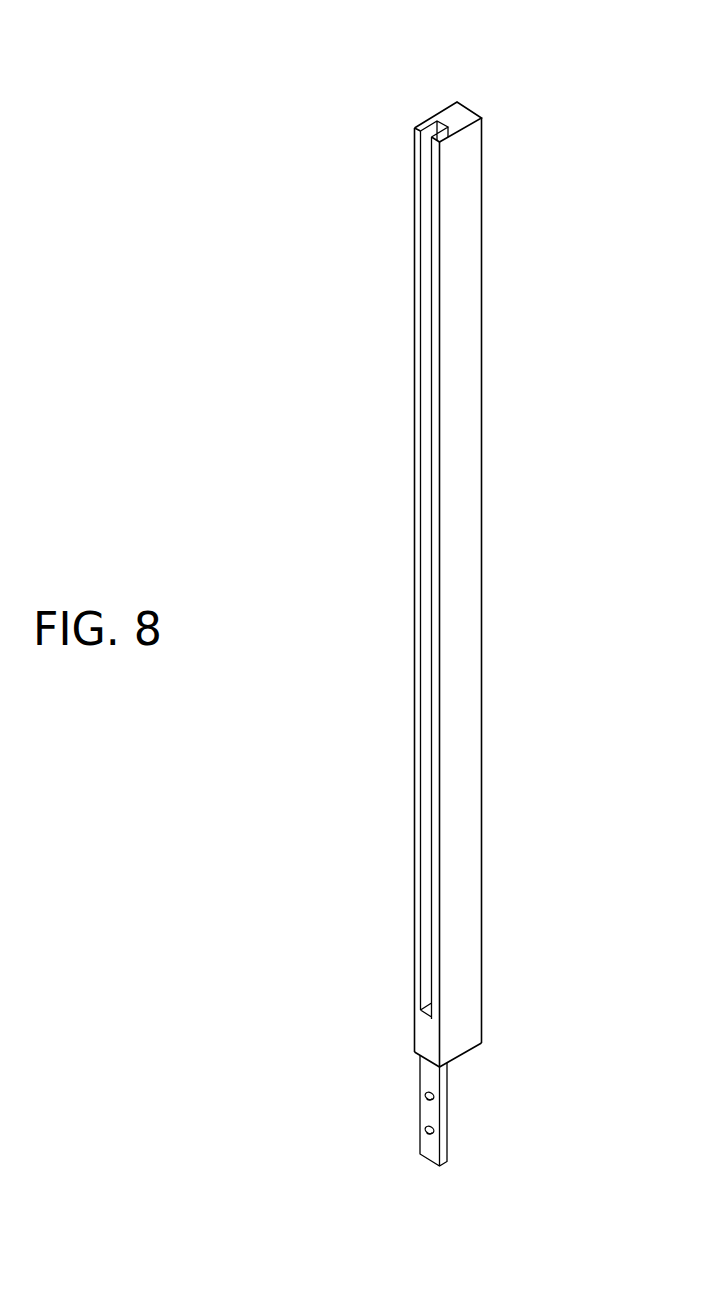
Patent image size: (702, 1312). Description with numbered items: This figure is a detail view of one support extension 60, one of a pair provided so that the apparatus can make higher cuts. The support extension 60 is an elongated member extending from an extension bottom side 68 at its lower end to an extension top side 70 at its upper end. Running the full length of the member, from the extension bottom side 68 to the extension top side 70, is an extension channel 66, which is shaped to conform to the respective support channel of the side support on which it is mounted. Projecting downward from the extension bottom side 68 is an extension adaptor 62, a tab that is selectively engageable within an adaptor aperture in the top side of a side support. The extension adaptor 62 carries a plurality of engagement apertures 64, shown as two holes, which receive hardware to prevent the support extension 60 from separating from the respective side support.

The support extension 60 is at (458, 680).
The extension adaptor 62 is at (447, 1110).
The engagement apertures 64 is at (424, 1096).
The extension channel 66 is at (428, 918).
The extension bottom side 68 is at (428, 1061).
The extension top side 70 is at (457, 122).